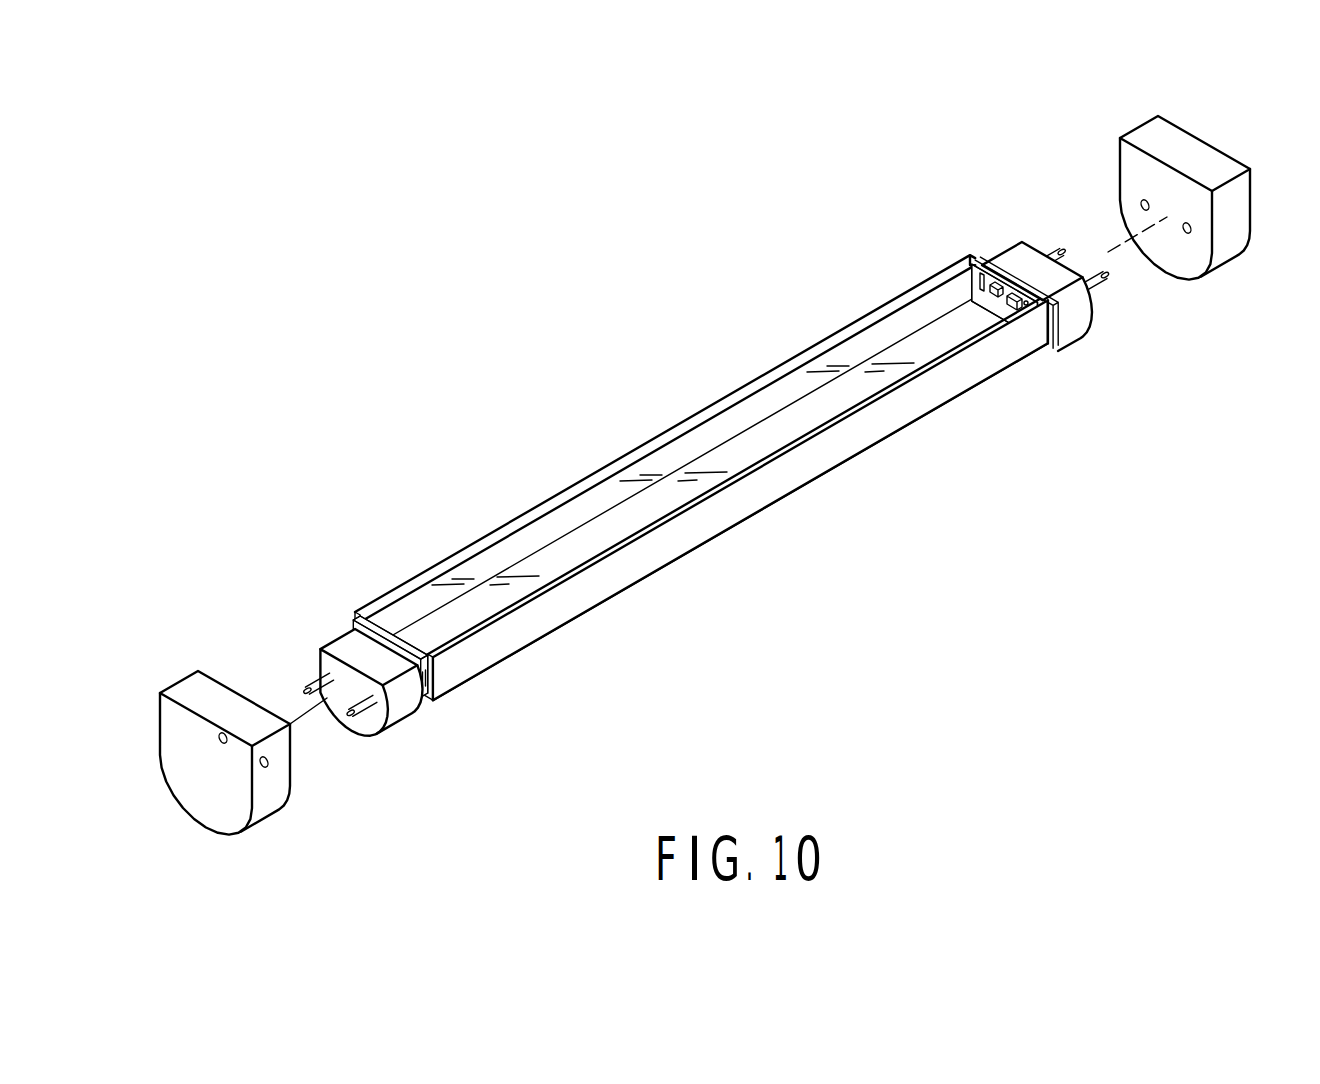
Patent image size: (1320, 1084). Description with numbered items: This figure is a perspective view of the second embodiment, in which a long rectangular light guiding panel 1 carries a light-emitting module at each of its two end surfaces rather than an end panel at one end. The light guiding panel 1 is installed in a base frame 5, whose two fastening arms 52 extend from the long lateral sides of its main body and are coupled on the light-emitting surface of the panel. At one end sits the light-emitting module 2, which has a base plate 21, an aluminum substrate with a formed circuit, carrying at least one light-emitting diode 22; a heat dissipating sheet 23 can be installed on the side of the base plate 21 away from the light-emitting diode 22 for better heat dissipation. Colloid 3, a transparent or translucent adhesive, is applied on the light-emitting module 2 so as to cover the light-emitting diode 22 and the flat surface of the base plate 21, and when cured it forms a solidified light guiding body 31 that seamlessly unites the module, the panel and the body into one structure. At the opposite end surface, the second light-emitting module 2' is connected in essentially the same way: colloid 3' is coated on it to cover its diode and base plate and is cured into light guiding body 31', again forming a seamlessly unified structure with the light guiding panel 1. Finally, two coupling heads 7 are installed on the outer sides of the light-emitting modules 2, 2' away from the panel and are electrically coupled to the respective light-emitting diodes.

The light guiding panel 1 is at (693, 455).
The light-emitting module 2 is at (1078, 353).
The base plate 21 is at (1055, 318).
The light-emitting diode 22 is at (1013, 306).
The heat dissipating sheet 23 is at (1057, 320).
The colloid 3 is at (985, 238).
The light guiding body 31 is at (993, 259).
The colloid 3' is at (381, 576).
The light guiding body 31' is at (388, 616).
The second light-emitting module 2' is at (362, 647).
The base frame 5 is at (866, 543).
The fastening arm 52 is at (793, 481).
The coupling head 7 is at (323, 660).